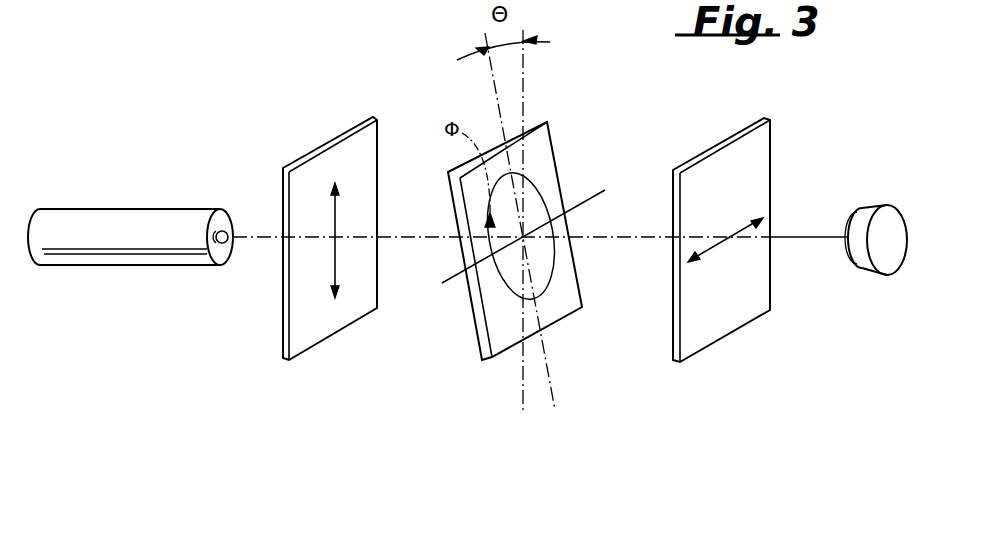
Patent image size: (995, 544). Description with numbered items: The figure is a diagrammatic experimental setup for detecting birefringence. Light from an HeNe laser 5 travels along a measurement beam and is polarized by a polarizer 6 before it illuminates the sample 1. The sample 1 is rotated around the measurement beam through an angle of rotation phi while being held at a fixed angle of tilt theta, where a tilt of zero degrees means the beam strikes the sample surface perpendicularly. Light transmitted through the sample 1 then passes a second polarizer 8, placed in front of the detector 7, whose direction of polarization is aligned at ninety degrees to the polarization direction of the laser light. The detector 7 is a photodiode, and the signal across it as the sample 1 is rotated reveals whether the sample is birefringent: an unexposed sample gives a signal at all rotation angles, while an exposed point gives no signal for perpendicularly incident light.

The HeNe laser 5 is at (103, 243).
The polarizer 6 is at (328, 318).
The sample 1 is at (502, 340).
The polarizer 8 is at (733, 313).
The detector 7 is at (888, 260).